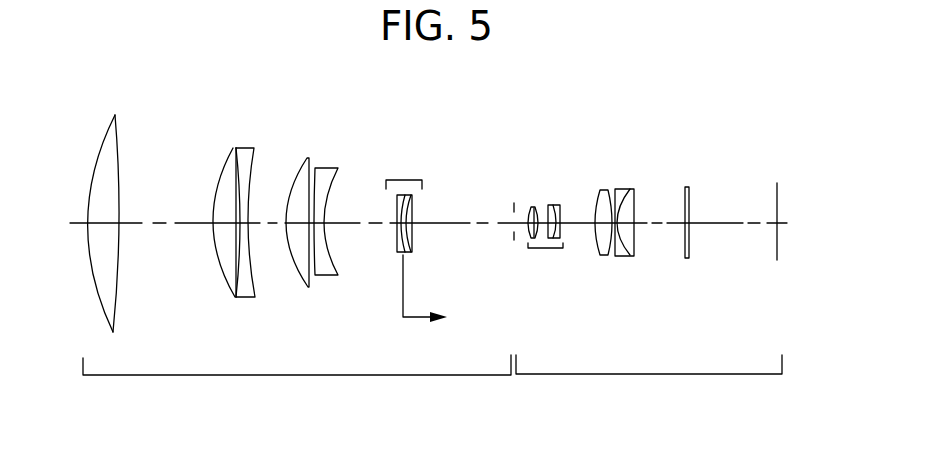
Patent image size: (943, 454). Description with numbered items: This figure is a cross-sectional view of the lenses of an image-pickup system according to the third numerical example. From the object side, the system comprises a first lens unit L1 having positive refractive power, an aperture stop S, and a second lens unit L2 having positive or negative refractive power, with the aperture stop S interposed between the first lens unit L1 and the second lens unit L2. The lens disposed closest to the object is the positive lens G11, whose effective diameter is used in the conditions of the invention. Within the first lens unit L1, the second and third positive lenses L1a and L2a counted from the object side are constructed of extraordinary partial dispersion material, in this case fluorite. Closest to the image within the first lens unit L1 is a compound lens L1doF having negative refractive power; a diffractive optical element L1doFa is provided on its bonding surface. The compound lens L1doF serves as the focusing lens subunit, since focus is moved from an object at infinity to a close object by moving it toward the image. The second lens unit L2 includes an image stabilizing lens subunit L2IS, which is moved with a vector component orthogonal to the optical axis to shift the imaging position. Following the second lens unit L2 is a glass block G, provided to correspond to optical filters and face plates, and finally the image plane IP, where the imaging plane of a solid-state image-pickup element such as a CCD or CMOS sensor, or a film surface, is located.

The positive lens G11 is at (113, 155).
The second positive lens L1a is at (225, 267).
The third positive lens L2a is at (313, 273).
The compound lens L1doF is at (426, 213).
The diffractive optical element L1doFa is at (393, 130).
The aperture stop S is at (514, 203).
The image stabilizing lens subunit L2IS is at (545, 248).
The glass block G is at (688, 198).
The image plane IP is at (777, 200).
The first lens unit L1 is at (297, 259).
The second lens unit L2 is at (648, 278).